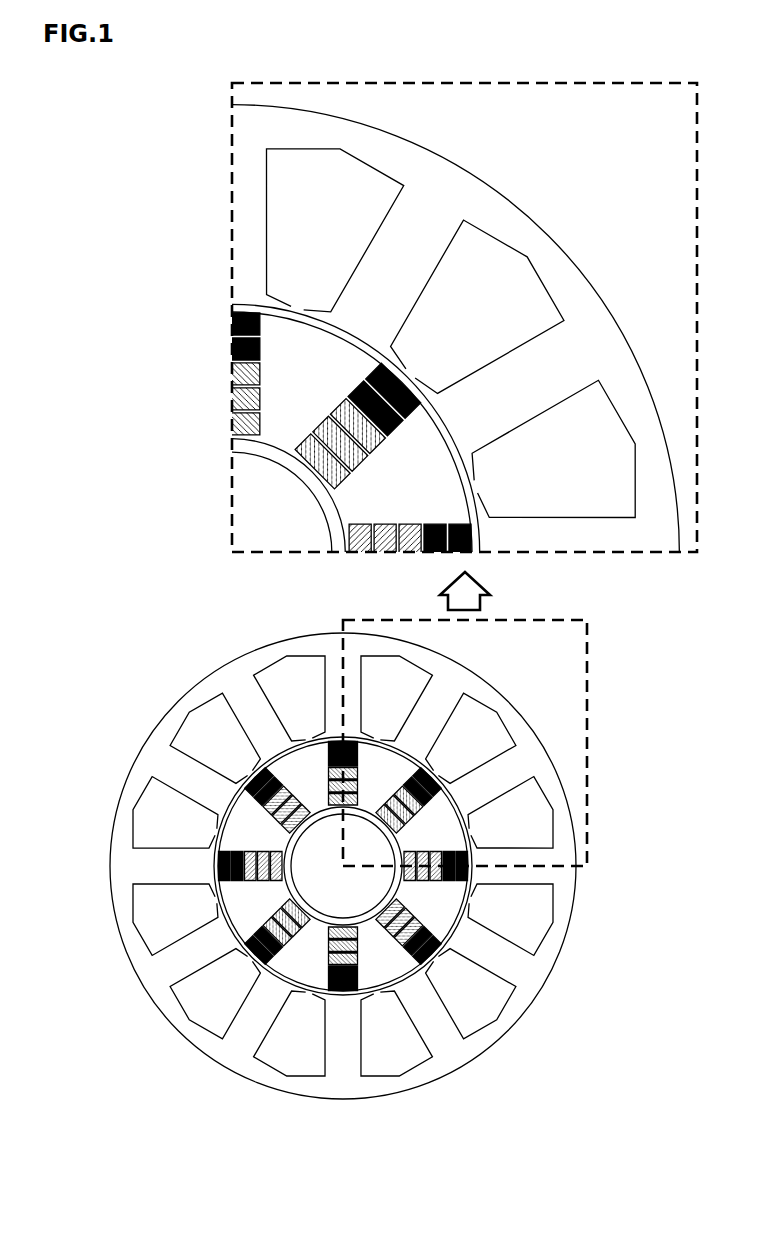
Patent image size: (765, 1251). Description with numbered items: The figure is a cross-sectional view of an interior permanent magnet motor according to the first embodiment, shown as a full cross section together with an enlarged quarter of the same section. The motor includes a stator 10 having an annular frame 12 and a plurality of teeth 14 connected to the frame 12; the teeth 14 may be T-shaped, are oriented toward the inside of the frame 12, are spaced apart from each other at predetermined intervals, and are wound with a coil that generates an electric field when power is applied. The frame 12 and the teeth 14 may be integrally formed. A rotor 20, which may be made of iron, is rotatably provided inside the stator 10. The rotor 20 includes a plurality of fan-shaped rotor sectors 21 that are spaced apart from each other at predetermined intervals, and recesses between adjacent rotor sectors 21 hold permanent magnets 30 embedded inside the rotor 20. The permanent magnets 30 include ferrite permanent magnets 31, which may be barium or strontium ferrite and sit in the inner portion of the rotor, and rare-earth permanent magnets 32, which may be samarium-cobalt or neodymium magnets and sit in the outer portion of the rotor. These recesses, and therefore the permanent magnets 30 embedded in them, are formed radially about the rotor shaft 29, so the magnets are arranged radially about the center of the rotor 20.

The stator 10 is at (339, 602).
The annular frame 12 is at (339, 602).
The teeth 14 is at (388, 607).
The rotor 20 is at (236, 722).
The rotor sectors 21 is at (236, 691).
The rotor shaft 29 is at (263, 792).
The permanent magnets 30 is at (284, 666).
The ferrite permanent magnets 31 is at (322, 664).
The rare-earth permanent magnets 32 is at (337, 652).